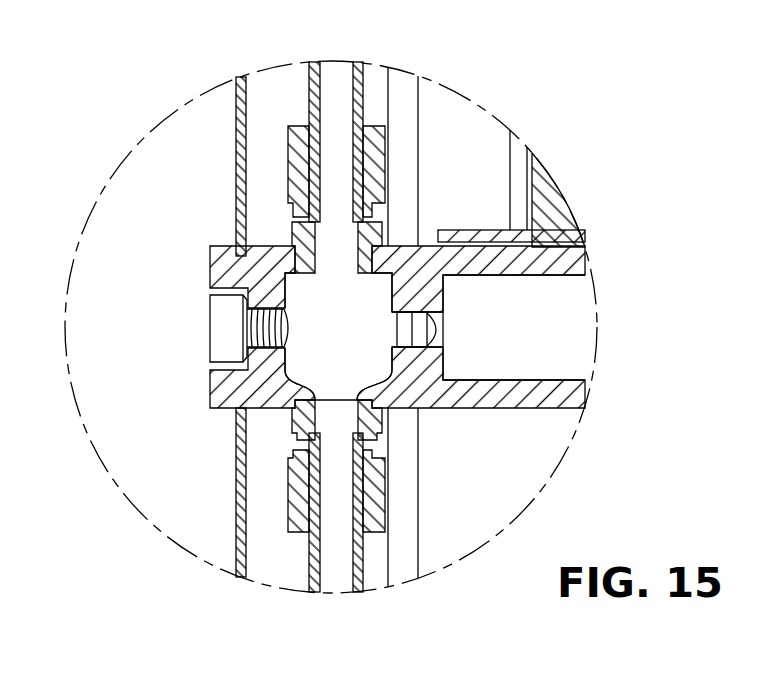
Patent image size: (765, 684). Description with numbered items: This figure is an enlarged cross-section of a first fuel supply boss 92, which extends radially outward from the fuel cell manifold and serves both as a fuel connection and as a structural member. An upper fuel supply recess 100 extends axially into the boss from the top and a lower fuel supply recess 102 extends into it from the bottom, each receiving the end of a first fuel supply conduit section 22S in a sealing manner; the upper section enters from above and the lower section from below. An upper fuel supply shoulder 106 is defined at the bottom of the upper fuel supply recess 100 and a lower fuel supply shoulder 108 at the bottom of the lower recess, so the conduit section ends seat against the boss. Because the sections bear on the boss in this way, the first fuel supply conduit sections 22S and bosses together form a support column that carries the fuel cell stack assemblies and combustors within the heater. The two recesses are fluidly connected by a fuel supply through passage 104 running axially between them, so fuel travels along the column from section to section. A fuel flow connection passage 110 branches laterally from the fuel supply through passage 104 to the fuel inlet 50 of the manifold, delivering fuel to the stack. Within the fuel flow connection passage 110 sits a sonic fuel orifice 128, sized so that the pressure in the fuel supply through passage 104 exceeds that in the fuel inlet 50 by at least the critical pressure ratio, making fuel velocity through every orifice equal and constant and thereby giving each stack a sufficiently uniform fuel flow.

The first fuel supply conduit section 22S is at (402, 637).
The upper fuel supply recess 100 is at (352, 185).
The upper fuel supply shoulder 106 is at (313, 222).
The fuel supply through passage 104 is at (305, 305).
The first fuel supply boss 92 is at (220, 389).
The lower fuel supply recess 102 is at (312, 462).
The lower fuel supply shoulder 108 is at (362, 435).
The sonic fuel orifice 128 is at (436, 318).
The fuel flow connection passage 110 is at (440, 331).
The fuel inlet 50 is at (563, 298).